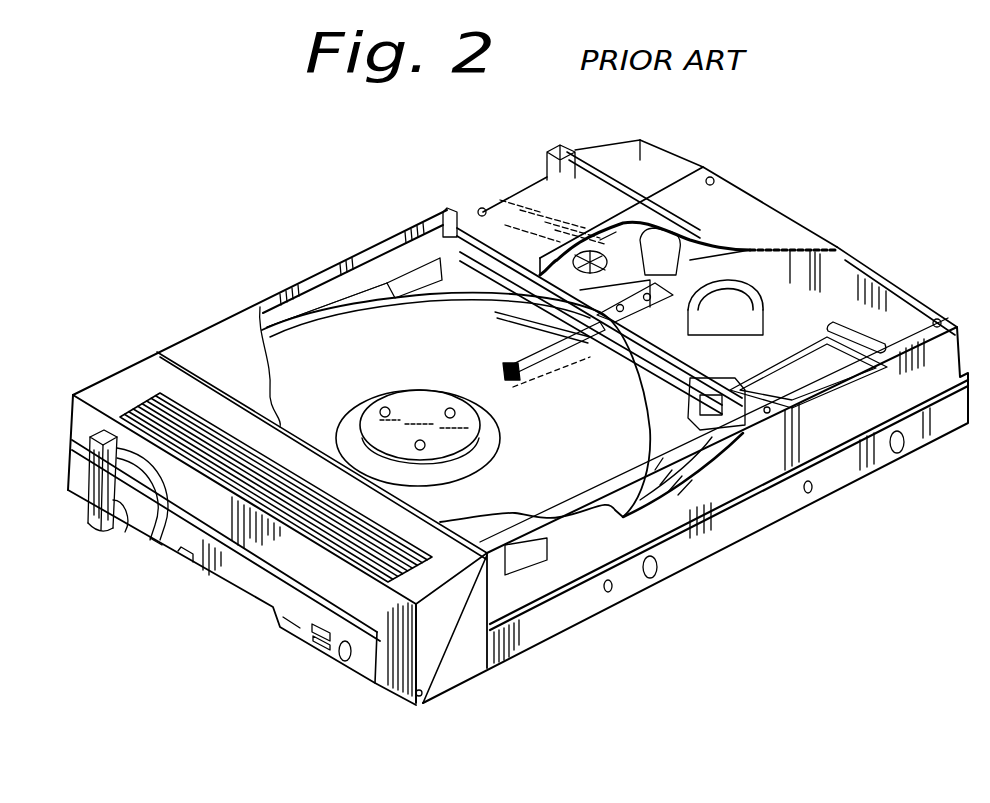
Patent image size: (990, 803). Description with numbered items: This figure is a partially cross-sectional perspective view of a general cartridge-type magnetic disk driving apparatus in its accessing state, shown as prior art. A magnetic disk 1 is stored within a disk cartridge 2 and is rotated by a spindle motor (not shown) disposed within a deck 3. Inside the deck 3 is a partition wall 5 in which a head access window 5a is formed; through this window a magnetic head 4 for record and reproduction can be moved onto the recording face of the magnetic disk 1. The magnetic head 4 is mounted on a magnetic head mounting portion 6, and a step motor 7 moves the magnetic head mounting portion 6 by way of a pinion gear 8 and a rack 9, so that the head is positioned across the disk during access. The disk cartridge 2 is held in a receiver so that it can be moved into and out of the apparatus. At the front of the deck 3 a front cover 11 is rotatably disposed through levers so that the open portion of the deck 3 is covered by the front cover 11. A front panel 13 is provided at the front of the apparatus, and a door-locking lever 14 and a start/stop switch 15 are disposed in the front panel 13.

The magnetic disk 1 is at (333, 333).
The disk cartridge 2 is at (373, 283).
The deck 3 is at (813, 437).
The magnetic head 4 is at (503, 370).
The partition wall 5 is at (743, 433).
The head access window 5a is at (525, 324).
The magnetic head mounting portion 6 is at (750, 250).
The step motor 7 is at (522, 198).
The pinion gear 8 is at (608, 237).
The rack 9 is at (667, 221).
The front cover 11 is at (140, 373).
The front panel 13 is at (300, 617).
The door-locking lever 14 is at (93, 528).
The start/stop switch 15 is at (343, 660).